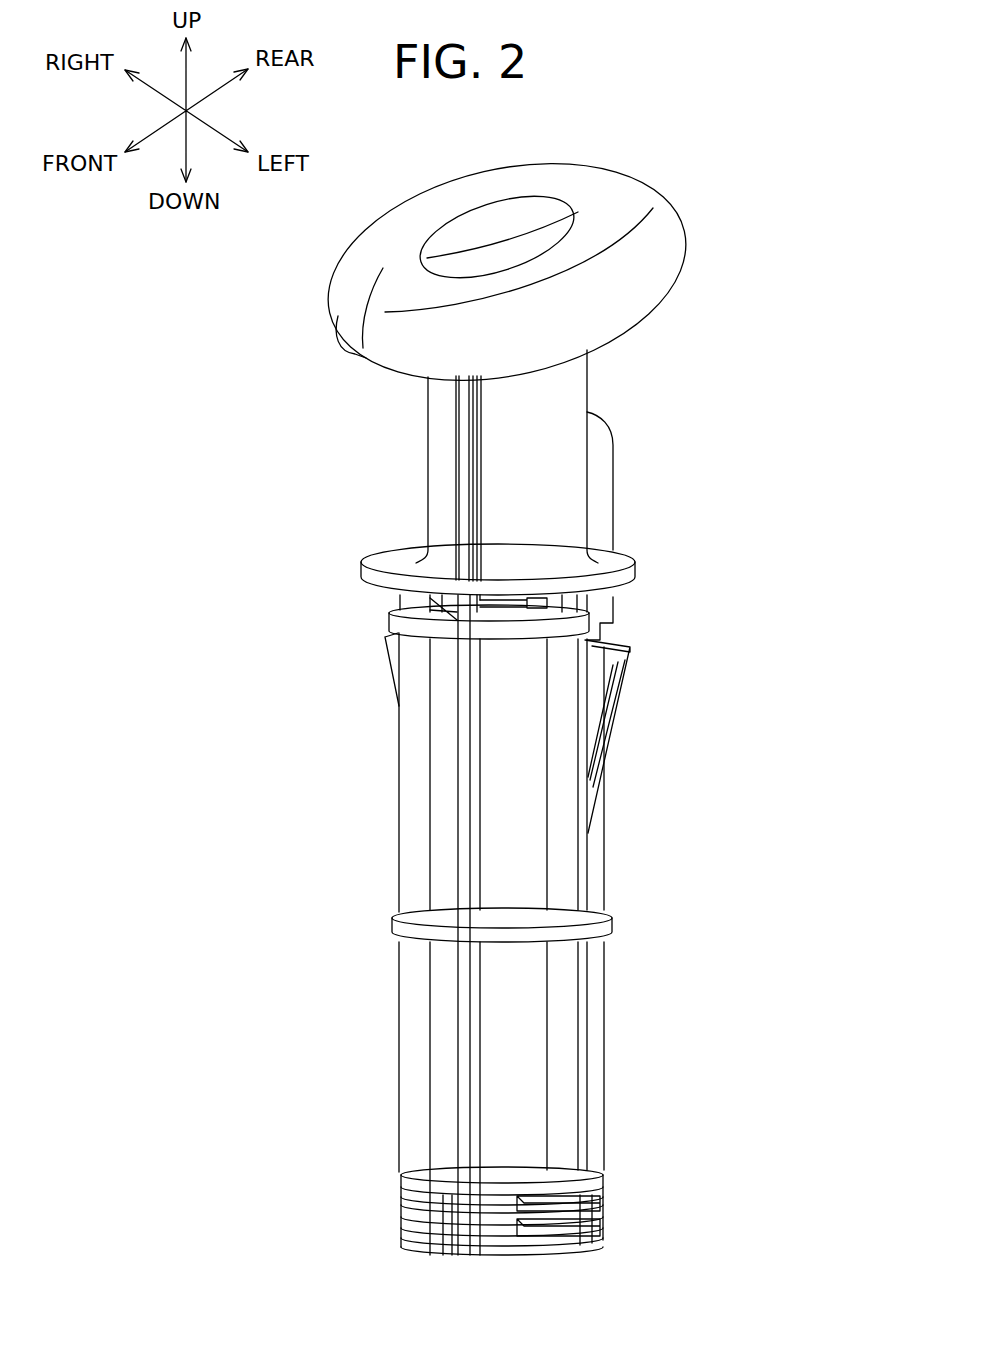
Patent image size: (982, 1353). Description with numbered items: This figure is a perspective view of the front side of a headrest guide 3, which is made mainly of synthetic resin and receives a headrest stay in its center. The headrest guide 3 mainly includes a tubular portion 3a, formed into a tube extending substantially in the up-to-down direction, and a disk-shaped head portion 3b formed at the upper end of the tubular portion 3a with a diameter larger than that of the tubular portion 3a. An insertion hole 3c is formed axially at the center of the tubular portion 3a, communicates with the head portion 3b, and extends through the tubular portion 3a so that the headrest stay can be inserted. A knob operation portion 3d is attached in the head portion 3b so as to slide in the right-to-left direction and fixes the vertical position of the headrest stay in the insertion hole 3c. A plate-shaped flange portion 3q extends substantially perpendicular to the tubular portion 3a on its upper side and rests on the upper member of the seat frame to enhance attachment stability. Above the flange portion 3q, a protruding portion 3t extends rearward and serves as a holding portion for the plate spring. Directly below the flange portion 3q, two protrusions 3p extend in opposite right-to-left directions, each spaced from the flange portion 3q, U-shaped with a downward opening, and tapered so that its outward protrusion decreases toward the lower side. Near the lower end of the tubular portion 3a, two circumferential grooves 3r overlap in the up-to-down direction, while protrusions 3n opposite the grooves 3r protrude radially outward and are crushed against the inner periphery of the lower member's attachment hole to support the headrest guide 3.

The headrest guide 3 is at (803, 208).
The tubular portion 3a is at (437, 450).
The head portion 3b is at (613, 180).
The insertion hole 3c is at (488, 215).
The knob operation portion 3d is at (355, 283).
The protruding portion 3t is at (600, 487).
The flange portion 3q is at (383, 563).
The protrusions 3p is at (395, 654).
The protrusions 3n is at (405, 1242).
The grooves 3r is at (552, 1198).